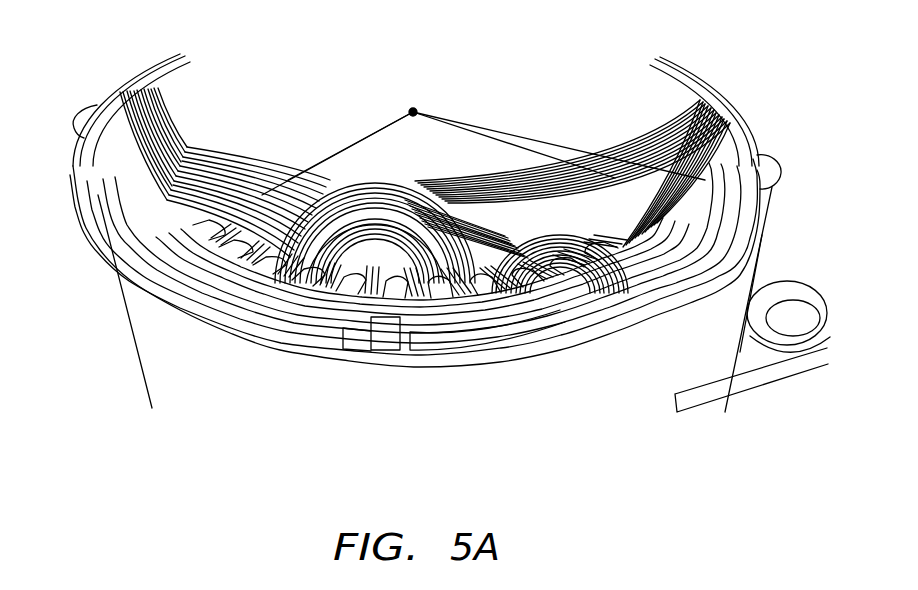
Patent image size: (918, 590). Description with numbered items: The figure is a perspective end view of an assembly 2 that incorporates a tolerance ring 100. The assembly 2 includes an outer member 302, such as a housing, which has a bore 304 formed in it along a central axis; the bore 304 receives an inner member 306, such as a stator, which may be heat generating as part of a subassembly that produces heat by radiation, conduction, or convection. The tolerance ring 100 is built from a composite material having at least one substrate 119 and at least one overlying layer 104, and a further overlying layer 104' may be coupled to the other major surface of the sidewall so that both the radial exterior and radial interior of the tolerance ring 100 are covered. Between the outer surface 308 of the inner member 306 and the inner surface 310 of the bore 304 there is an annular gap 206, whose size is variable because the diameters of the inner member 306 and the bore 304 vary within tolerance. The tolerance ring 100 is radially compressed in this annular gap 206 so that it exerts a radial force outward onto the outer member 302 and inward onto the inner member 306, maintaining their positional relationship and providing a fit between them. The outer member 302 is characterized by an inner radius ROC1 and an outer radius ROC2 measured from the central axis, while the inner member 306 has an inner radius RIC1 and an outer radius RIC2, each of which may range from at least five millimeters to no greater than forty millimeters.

The assembly 2 is at (792, 40).
The tolerance ring 100 is at (667, 332).
The overlying layer 104 is at (521, 259).
The overlying layer 104' is at (116, 304).
The substrate 119 is at (730, 335).
The annular gap 206 is at (372, 330).
The outer member 302 is at (440, 370).
The bore 304 is at (343, 333).
The inner member 306 is at (546, 313).
The outer surface 308 is at (480, 322).
The inner surface 310 is at (598, 336).
The inner radius RIC1 is at (327, 158).
The outer radius RIC2 is at (365, 140).
The inner radius ROC1 is at (507, 136).
The outer radius ROC2 is at (565, 148).